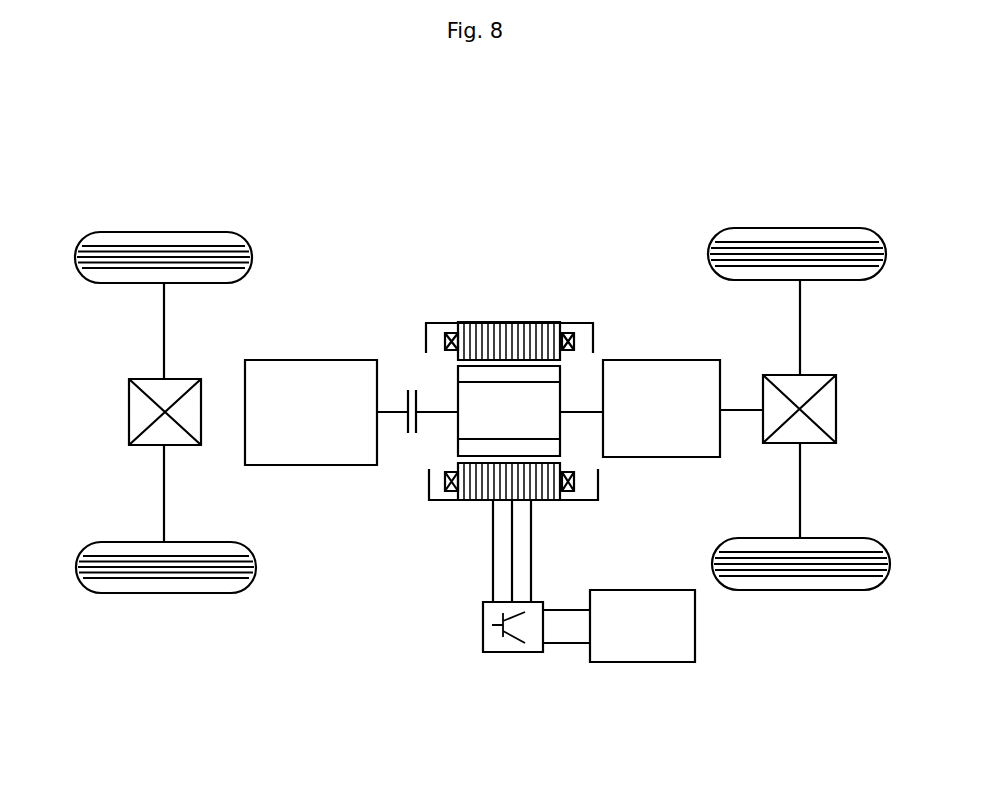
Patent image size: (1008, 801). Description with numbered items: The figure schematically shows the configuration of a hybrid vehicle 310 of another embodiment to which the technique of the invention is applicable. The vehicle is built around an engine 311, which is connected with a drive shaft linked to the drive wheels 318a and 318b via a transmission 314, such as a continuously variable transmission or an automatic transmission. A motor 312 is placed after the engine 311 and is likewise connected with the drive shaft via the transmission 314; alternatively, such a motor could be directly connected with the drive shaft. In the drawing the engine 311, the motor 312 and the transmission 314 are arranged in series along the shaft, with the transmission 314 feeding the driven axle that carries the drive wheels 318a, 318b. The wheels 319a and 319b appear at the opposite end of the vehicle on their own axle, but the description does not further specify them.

The hybrid vehicle 310 is at (386, 645).
The engine 311 is at (310, 465).
The motor 312 is at (508, 322).
The transmission 314 is at (662, 360).
The drive wheel 318a is at (798, 228).
The drive wheel 318b is at (801, 590).
The front wheel 319a is at (164, 232).
The front wheel 319b is at (167, 593).